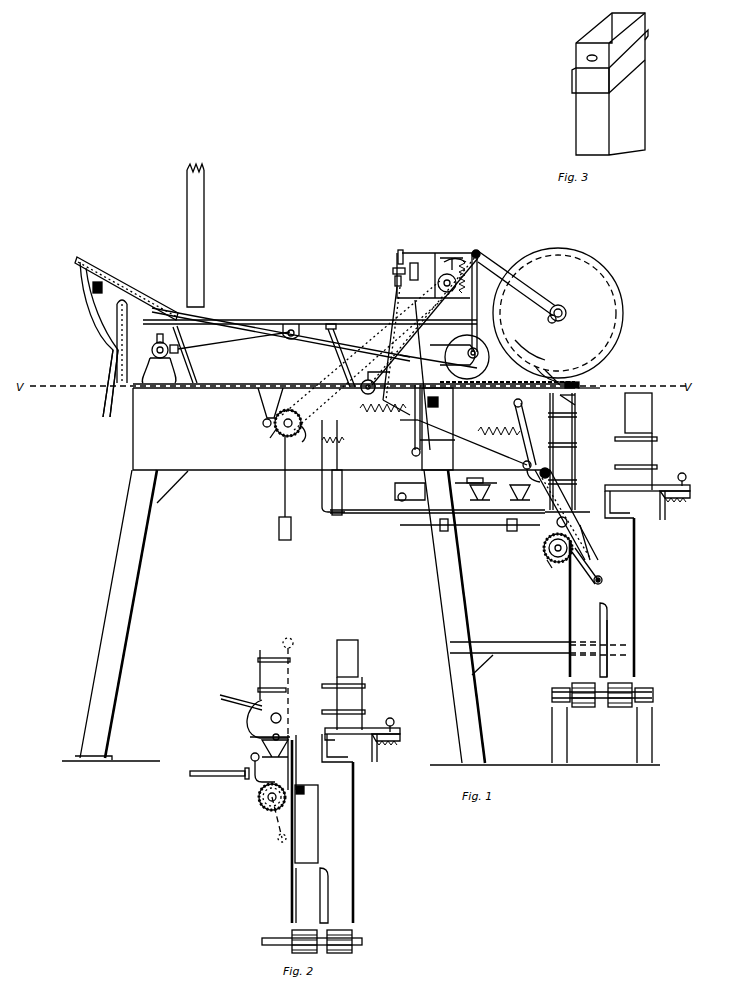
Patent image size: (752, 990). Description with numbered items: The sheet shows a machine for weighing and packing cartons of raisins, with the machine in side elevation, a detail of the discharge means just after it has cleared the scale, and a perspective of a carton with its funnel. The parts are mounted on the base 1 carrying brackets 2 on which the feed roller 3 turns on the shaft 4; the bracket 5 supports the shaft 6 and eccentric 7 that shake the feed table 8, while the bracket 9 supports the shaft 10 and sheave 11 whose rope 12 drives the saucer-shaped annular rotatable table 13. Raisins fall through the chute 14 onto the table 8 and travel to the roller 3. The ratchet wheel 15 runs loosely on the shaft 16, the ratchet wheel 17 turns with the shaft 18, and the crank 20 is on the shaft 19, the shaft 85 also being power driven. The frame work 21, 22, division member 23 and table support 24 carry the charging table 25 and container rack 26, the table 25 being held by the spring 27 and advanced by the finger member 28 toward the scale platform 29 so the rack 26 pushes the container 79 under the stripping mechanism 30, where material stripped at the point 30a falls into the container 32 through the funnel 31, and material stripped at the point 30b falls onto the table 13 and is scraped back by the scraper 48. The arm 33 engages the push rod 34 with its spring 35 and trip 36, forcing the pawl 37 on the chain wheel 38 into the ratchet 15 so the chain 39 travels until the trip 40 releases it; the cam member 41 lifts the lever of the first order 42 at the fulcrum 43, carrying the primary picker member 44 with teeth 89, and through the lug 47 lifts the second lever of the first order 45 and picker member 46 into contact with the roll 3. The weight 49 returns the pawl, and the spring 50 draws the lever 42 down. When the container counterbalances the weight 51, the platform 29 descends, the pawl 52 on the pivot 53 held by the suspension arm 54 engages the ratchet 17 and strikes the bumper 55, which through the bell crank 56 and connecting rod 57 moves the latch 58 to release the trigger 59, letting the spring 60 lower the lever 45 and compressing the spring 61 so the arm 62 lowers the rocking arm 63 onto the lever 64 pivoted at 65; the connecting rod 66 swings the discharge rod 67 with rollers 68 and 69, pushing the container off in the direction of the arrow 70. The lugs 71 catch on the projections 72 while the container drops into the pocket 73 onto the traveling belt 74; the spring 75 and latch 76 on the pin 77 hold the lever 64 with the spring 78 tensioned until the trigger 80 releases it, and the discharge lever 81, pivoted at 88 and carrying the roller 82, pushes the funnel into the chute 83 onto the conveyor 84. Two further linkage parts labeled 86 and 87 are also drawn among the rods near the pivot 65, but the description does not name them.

In FIG. 1, the base 1 is at (134, 459).
In FIG. 1, the brackets 2 is at (479, 297).
In FIG. 1, the feed roller 3 is at (466, 372).
In FIG. 1, the shaft 4 is at (478, 356).
In FIG. 1, the bracket 5 is at (160, 364).
In FIG. 1, the shaft 6 is at (152, 350).
In FIG. 1, the eccentric 7 is at (154, 354).
In FIG. 1, the feed table 8 is at (248, 320).
In FIG. 1, the bracket 9 is at (120, 400).
In FIG. 1, the shaft 10 is at (112, 358).
In FIG. 1, the sheave 11 is at (170, 293).
In FIG. 1, the rope 12 is at (128, 320).
In FIG. 1, the annular rotatable table 13 is at (135, 287).
In FIG. 1, the chute 14 is at (204, 212).
In FIG. 1, the ratchet wheel 15 is at (272, 440).
In FIG. 1, the shaft 16 is at (280, 433).
In FIG. 1, the ratchet wheel 17 is at (552, 560).
In FIG. 2, the ratchet wheel 17 is at (266, 808).
In FIG. 1, the shaft 18 is at (548, 554).
In FIG. 2, the shaft 18 is at (260, 800).
In FIG. 1, the shaft 19 is at (362, 392).
In FIG. 1, the crank 20 is at (376, 390).
In FIG. 1, the frame work 21 is at (569, 601).
In FIG. 2, the frame work 21 is at (290, 873).
In FIG. 1, the frame work 22 is at (636, 601).
In FIG. 2, the frame work 22 is at (356, 873).
In FIG. 1, the division member 23 is at (606, 604).
In FIG. 1, the table support 24 is at (618, 498).
In FIG. 2, the table support 24 is at (332, 740).
In FIG. 1, the table 25 is at (610, 486).
In FIG. 2, the table 25 is at (326, 728).
In FIG. 1, the container rack 26 is at (620, 452).
In FIG. 2, the container rack 26 is at (362, 700).
In FIG. 1, the spring 27 is at (672, 500).
In FIG. 2, the spring 27 is at (388, 745).
In FIG. 1, the finger member 28 is at (687, 477).
In FIG. 2, the finger member 28 is at (395, 723).
In FIG. 1, the scale platform 29 is at (575, 470).
In FIG. 2, the scale platform 29 is at (302, 724).
In FIG. 1, the stripping mechanism 30 is at (580, 380).
In FIG. 1, the stripping point 30a is at (572, 381).
In FIG. 1, the stripping point 30b is at (556, 374).
In FIG. 1, the funnel 31 is at (576, 394).
In FIG. 3, the funnel 31 is at (578, 58).
In FIG. 1, the container 32 is at (576, 430).
In FIG. 3, the container 32 is at (580, 123).
In FIG. 1, the arm 33 is at (664, 520).
In FIG. 2, the arm 33 is at (374, 762).
In FIG. 1, the push rod 34 is at (586, 505).
In FIG. 1, the spring 35 is at (336, 458).
In FIG. 1, the trip 36 is at (344, 423).
In FIG. 1, the pawl 37 is at (303, 436).
In FIG. 1, the chain wheel 38 is at (286, 393).
In FIG. 1, the chain 39 is at (320, 380).
In FIG. 1, the trip 40 is at (262, 423).
In FIG. 1, the cam member 41 is at (450, 292).
In FIG. 1, the lever of the first order 42 is at (462, 258).
In FIG. 1, the fulcrum 43 is at (480, 256).
In FIG. 1, the primary picker member 44 is at (512, 323).
In FIG. 1, the second lever of the first order 45 is at (441, 258).
In FIG. 1, the picker member 46 is at (495, 312).
In FIG. 1, the lug 47 is at (478, 250).
In FIG. 1, the scraper 48 is at (104, 280).
In FIG. 1, the weight 49 is at (277, 533).
In FIG. 1, the spring 50 is at (455, 256).
In FIG. 1, the weight 51 is at (472, 477).
In FIG. 1, the pawl 52 is at (558, 526).
In FIG. 2, the pawl 52 is at (257, 774).
In FIG. 1, the pivot 53 is at (525, 522).
In FIG. 2, the pivot 53 is at (251, 756).
In FIG. 1, the suspension arm 54 is at (524, 472).
In FIG. 2, the suspension arm 54 is at (250, 737).
In FIG. 1, the bumper 55 is at (438, 526).
In FIG. 2, the bumper 55 is at (205, 776).
In FIG. 1, the bell crank 56 is at (392, 512).
In FIG. 1, the connecting rod 57 is at (434, 465).
In FIG. 1, the latch 58 is at (393, 276).
In FIG. 1, the trigger 59 is at (396, 266).
In FIG. 1, the spring 60 is at (424, 270).
In FIG. 1, the spring 61 is at (395, 284).
In FIG. 1, the arm 62 is at (394, 295).
In FIG. 1, the rocking arm 63 is at (395, 363).
In FIG. 1, the lever 64 is at (414, 443).
In FIG. 1, the pivot 65 is at (412, 454).
In FIG. 1, the connecting rod 66 is at (444, 440).
In FIG. 2, the connecting rod 66 is at (224, 704).
In FIG. 1, the discharge rod 67 is at (520, 420).
In FIG. 2, the discharge rod 67 is at (290, 665).
In FIG. 1, the roller 68 is at (514, 401).
In FIG. 2, the roller 68 is at (283, 643).
In FIG. 1, the roller 69 is at (550, 470).
In FIG. 2, the roller 69 is at (271, 718).
In FIG. 1, the arrow 70 is at (620, 522).
In FIG. 2, the arrow 70 is at (312, 750).
In FIG. 1, the lugs 71 is at (576, 405).
In FIG. 1, the projections 72 is at (590, 540).
In FIG. 2, the projections 72 is at (318, 788).
In FIG. 1, the pocket 73 is at (592, 640).
In FIG. 2, the pocket 73 is at (302, 884).
In FIG. 1, the traveling belt 74 is at (588, 678).
In FIG. 2, the traveling belt 74 is at (308, 924).
In FIG. 1, the spring 75 is at (478, 431).
In FIG. 1, the latch 76 is at (436, 407).
In FIG. 1, the pin 77 is at (399, 420).
In FIG. 1, the spring 78 is at (358, 408).
In FIG. 1, the container 79 is at (652, 412).
In FIG. 1, the trigger 80 is at (425, 360).
In FIG. 1, the discharge lever 81 is at (598, 570).
In FIG. 2, the discharge lever 81 is at (276, 835).
In FIG. 1, the roller 82 is at (603, 581).
In FIG. 2, the roller 82 is at (279, 842).
In FIG. 1, the chute 83 is at (616, 638).
In FIG. 2, the chute 83 is at (330, 884).
In FIG. 1, the conveyor 84 is at (624, 678).
In FIG. 2, the conveyor 84 is at (344, 924).
In FIG. 1, the shaft 85 is at (602, 707).
In FIG. 2, the shaft 85 is at (280, 938).
In FIG. 1, the rod 86 is at (416, 427).
In FIG. 1, the rod 87 is at (386, 416).
In FIG. 1, the pivot 88 is at (540, 560).
In FIG. 1, the teeth 89 is at (538, 340).